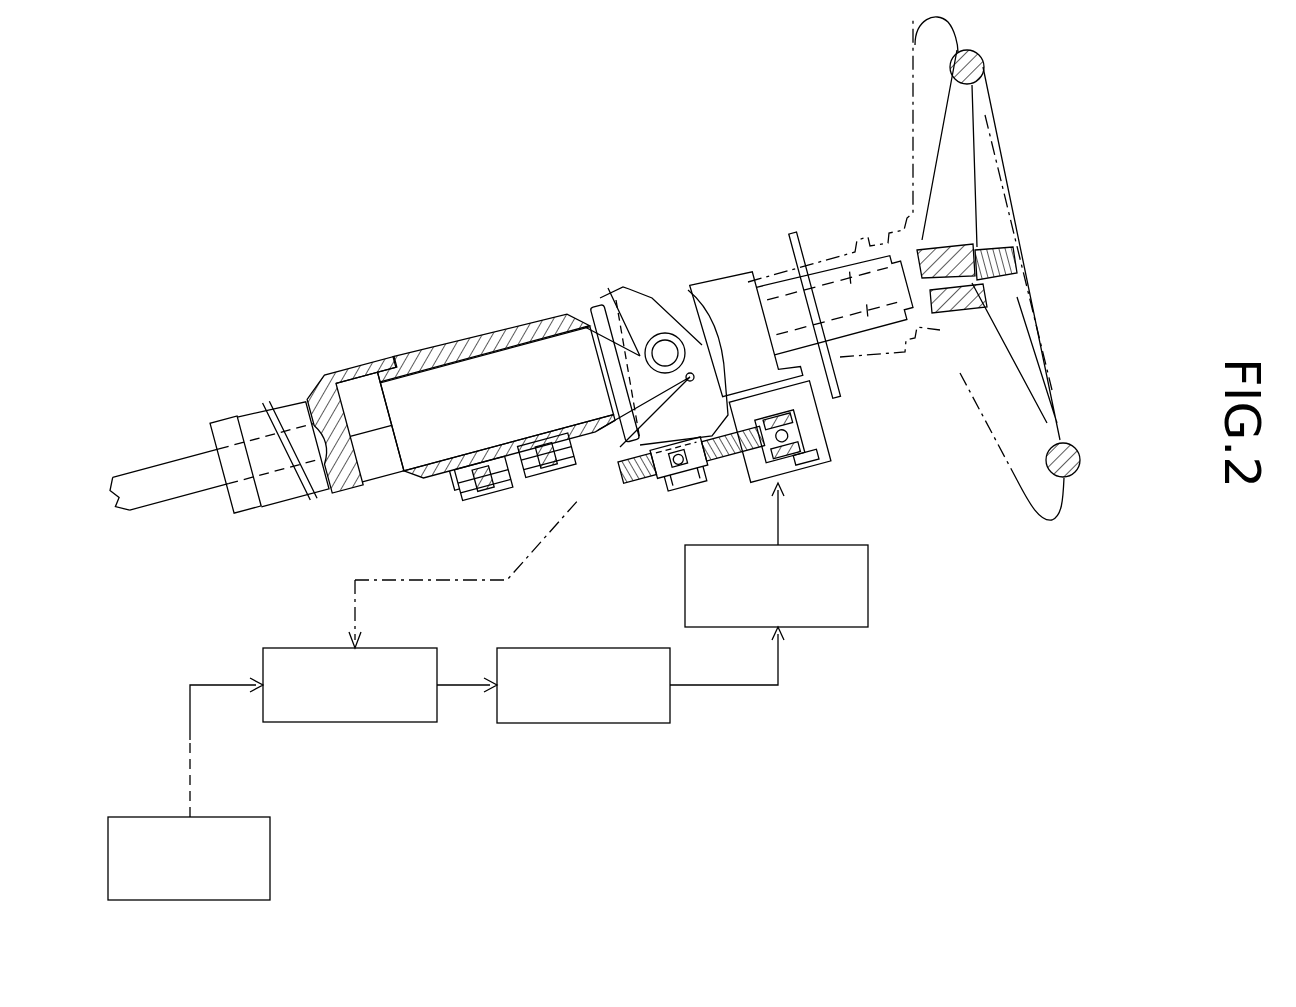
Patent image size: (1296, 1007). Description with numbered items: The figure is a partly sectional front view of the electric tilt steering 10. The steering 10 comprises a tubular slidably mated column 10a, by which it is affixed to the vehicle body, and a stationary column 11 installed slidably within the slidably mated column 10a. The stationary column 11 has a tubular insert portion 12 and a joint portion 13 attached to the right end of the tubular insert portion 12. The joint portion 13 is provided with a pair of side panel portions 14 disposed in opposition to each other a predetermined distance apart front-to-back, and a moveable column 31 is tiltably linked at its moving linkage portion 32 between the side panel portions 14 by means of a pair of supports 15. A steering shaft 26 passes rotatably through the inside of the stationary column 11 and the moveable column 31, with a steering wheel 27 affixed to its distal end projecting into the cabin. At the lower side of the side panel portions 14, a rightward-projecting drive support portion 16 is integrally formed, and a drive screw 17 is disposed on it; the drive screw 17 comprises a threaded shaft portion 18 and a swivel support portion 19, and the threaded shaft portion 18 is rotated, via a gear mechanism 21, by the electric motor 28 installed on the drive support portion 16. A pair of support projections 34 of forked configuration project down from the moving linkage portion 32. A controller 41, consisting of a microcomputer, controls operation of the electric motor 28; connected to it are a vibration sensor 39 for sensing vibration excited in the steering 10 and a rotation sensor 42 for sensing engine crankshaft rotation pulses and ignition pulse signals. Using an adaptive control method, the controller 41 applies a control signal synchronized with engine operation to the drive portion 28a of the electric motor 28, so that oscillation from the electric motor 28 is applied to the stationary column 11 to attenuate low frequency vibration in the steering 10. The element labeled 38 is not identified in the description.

The electric tilt steering 10 is at (366, 350).
The slidably mated column 10a is at (437, 340).
The tubular insert portion 12 is at (494, 383).
The supports 15 is at (640, 355).
The stationary column 11 is at (628, 280).
The joint portion 13 is at (674, 315).
The side panel portions 14 is at (627, 313).
The vibration sensor 39 is at (613, 457).
The moving linkage portion 32 is at (736, 312).
The moveable column 31 is at (747, 275).
The mounting plate 38 is at (857, 268).
The steering shaft 26 is at (915, 308).
The steering wheel 27 is at (1017, 200).
The drive support portion 16 is at (833, 450).
The drive screw 17 is at (807, 420).
The gear mechanism 21 is at (800, 460).
The swivel support portion 19 is at (765, 472).
The threaded shaft portion 18 is at (635, 475).
The support projections 34 is at (662, 485).
The electric motor 28 is at (843, 543).
The drive portion 28a is at (567, 648).
The controller 41 is at (393, 647).
The rotation sensor 42 is at (225, 817).